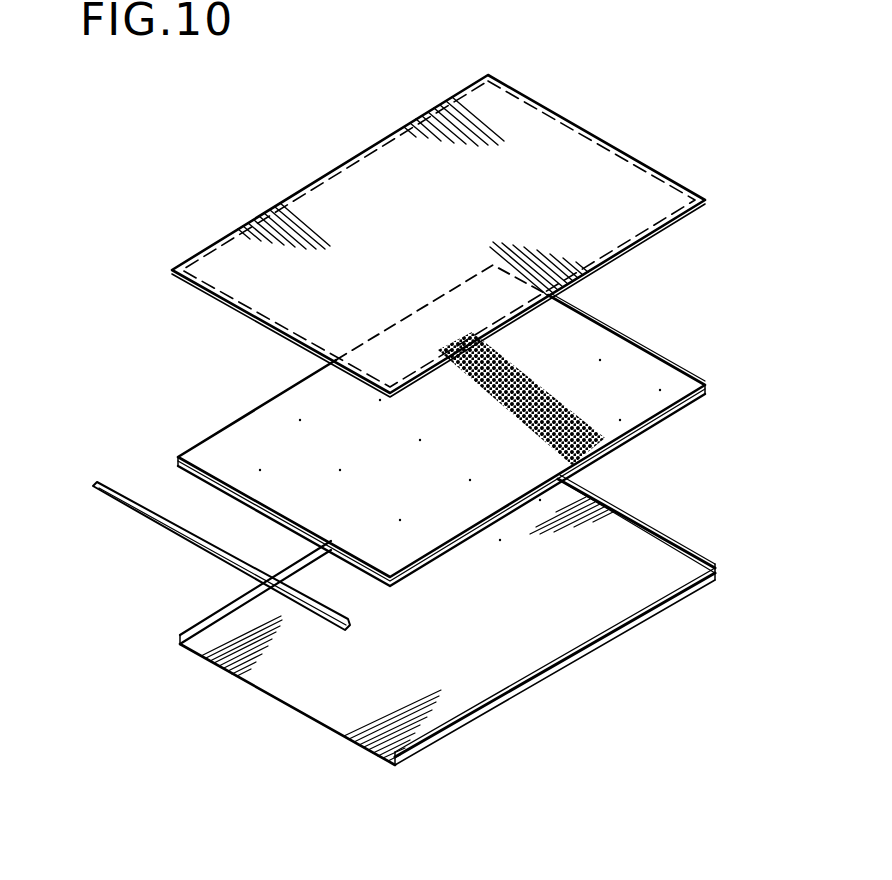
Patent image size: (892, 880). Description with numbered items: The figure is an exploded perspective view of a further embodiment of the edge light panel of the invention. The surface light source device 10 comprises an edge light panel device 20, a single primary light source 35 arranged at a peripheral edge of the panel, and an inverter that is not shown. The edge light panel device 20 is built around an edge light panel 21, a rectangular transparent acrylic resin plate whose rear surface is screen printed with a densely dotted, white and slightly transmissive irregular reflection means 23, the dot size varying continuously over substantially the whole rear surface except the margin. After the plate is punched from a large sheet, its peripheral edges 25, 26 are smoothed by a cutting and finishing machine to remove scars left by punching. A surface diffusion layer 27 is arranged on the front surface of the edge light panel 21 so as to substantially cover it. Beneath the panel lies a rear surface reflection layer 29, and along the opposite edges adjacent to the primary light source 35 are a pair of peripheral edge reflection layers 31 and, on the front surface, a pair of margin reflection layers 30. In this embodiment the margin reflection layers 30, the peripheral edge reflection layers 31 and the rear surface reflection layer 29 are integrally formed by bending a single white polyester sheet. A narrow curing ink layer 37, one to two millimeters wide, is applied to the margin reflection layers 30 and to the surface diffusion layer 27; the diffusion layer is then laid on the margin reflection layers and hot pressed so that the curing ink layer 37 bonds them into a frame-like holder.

The surface light source device 10 is at (182, 306).
The edge light panel device 20 is at (730, 250).
The edge light panel 21 is at (237, 418).
The irregular reflection means 23 is at (647, 405).
The peripheral edge 25 is at (195, 474).
The peripheral edge 26 is at (637, 341).
The surface diffusion layer 27 is at (641, 243).
The rear surface reflection layer 29 is at (270, 680).
The margin reflection layers 30 is at (673, 540).
The peripheral edge reflection layers 31 is at (193, 637).
The primary light source 35 is at (172, 537).
The curing ink layer 37 is at (312, 190).